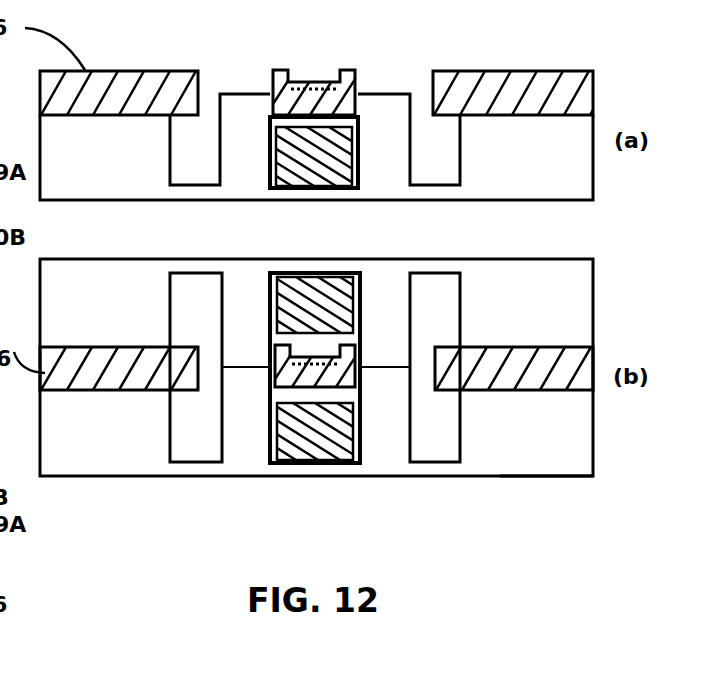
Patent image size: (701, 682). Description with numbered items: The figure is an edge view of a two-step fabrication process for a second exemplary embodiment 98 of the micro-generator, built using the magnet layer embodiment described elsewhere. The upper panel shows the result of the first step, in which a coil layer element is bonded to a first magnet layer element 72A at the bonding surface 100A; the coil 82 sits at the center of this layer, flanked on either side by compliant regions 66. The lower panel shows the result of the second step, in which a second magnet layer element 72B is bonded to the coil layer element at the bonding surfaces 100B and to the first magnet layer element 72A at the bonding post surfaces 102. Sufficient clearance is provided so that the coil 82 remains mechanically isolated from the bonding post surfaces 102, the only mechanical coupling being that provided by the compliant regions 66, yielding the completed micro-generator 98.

The coil 82 is at (312, 84).
The bonding surface 100A is at (62, 118).
The bonding surfaces 100B is at (73, 345).
The compliant regions 66 is at (196, 192).
The first magnet layer element 72A is at (555, 188).
The second magnet layer element 72B is at (568, 280).
The bonding post surfaces 102 is at (248, 365).
The second exemplary embodiment of the micro-generator 98 is at (540, 490).